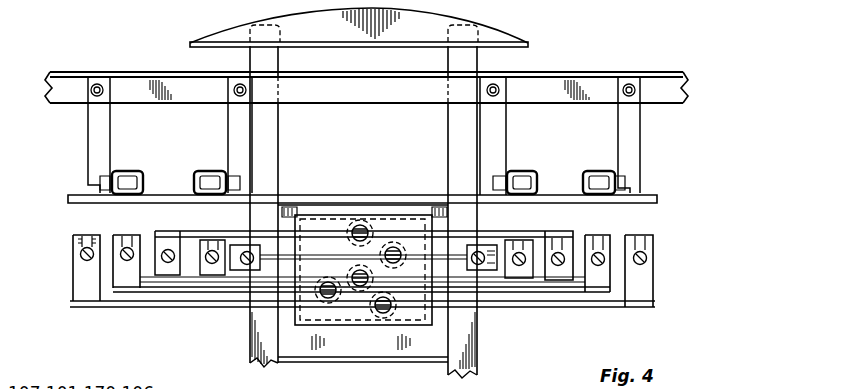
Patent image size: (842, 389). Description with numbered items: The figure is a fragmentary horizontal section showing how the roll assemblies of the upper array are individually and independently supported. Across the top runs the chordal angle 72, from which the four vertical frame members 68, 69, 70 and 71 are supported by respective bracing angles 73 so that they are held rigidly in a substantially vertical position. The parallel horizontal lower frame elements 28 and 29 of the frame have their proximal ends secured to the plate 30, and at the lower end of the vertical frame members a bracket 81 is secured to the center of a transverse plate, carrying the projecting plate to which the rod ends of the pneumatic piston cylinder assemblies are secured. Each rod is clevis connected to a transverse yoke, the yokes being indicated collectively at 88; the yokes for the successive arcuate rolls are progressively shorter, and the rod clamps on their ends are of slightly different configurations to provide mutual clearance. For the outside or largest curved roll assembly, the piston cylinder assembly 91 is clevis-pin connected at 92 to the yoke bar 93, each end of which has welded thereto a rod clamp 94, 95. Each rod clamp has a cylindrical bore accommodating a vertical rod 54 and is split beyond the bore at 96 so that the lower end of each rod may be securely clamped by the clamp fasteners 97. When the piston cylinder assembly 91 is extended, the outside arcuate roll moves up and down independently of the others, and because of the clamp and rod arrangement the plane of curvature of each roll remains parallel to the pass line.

The plate 30 is at (443, 22).
The chordal angle 72 is at (550, 82).
The bracing angle 73 is at (88, 134).
The vertical frame member 71 is at (135, 170).
The vertical frame member 70 is at (198, 170).
The vertical frame member 69 is at (522, 170).
The vertical frame member 68 is at (593, 170).
The split 96 is at (87, 238).
The clamp fasteners 97 is at (74, 241).
The vertical rod 54 is at (80, 256).
The rod clamp 94 is at (80, 285).
The rod clamp 95 is at (648, 287).
The lower frame element 29 is at (246, 335).
The lower frame element 28 is at (480, 352).
The yokes 88 is at (496, 311).
The yoke bar 93 is at (583, 310).
The piston cylinder assembly 91 is at (372, 318).
The clevis-pin connection 92 is at (384, 314).
The bracket 81 is at (333, 331).